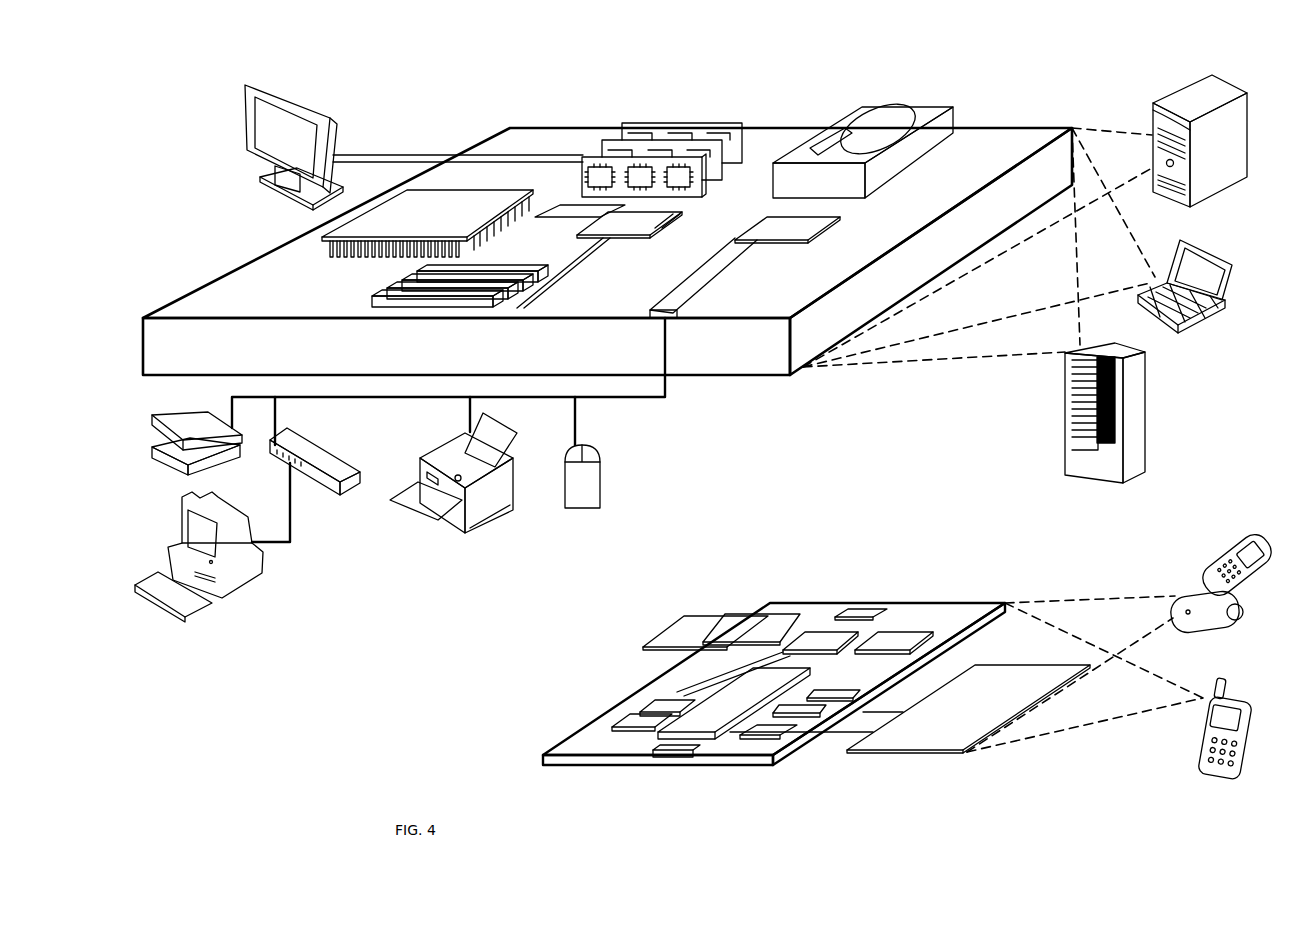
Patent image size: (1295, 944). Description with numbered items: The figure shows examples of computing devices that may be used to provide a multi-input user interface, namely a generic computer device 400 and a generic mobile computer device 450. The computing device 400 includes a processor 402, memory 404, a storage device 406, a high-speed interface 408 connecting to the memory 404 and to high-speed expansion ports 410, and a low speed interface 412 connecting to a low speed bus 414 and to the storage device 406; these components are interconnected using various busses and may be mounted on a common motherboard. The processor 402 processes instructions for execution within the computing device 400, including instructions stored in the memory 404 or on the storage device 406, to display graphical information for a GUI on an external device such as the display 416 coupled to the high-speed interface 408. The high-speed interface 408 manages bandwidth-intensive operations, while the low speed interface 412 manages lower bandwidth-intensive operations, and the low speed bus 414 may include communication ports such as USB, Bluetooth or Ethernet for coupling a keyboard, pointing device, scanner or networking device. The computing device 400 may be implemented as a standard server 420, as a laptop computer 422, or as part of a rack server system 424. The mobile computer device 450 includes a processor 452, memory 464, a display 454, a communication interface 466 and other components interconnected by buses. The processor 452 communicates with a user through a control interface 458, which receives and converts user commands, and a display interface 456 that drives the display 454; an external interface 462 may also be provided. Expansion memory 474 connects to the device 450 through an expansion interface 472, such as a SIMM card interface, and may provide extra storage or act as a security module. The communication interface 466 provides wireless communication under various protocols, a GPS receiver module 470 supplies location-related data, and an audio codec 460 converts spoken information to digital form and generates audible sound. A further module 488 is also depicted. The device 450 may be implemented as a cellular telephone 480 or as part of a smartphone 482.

The computing device 400 is at (438, 99).
The processor 402 is at (322, 239).
The memory 404 is at (632, 123).
The storage device 406 is at (850, 114).
The high-speed interface 408 is at (603, 222).
The high-speed expansion ports 410 is at (383, 288).
The low speed interface 412 is at (785, 228).
The low speed bus 414 is at (677, 318).
The display 416 is at (244, 90).
The standard server 420 is at (1152, 110).
The laptop computer 422 is at (1180, 240).
The rack server system 424 is at (1065, 435).
The mobile computer device 450 is at (753, 574).
The processor 452 is at (705, 750).
The display 454 is at (965, 752).
The display interface 456 is at (792, 737).
The control interface 458 is at (807, 723).
The audio codec 460 is at (813, 710).
The external interface 462 is at (675, 755).
The memory 464 is at (627, 712).
The communication interface 466 is at (821, 634).
The GPS receiver module 470 is at (862, 612).
The expansion interface 472 is at (744, 612).
The expansion memory 474 is at (679, 612).
The wireless module 488 is at (891, 631).
The cellular telephone 480 is at (1223, 542).
The smartphone 482 is at (1208, 678).